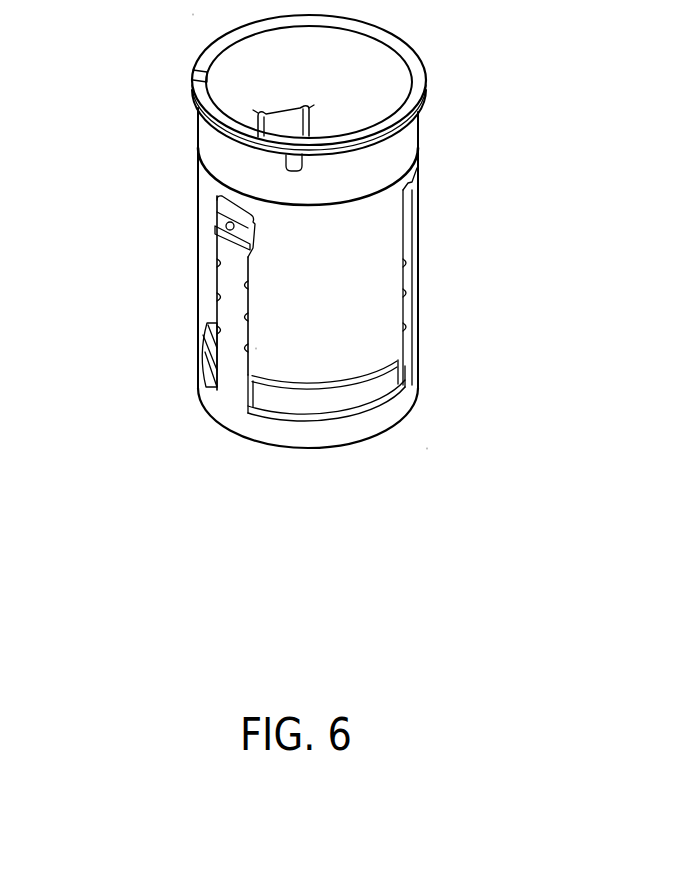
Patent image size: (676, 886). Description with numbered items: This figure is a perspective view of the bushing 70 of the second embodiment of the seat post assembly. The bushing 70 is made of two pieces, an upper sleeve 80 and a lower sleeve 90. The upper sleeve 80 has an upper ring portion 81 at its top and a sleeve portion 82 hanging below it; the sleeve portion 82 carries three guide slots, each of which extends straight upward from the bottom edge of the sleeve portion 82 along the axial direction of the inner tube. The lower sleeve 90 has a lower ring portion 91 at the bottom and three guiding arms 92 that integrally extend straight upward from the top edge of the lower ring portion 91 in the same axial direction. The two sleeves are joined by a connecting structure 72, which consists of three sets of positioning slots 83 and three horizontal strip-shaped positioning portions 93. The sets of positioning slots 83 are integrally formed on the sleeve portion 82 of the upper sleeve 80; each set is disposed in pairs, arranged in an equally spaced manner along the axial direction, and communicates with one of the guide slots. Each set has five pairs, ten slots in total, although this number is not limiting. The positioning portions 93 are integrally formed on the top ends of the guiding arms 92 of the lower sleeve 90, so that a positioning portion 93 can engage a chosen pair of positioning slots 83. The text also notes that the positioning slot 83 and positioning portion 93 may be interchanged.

The bushing 70 is at (535, 118).
The upper sleeve 80 is at (426, 113).
The upper ring portion 81 is at (212, 142).
The sleeve portion 82 is at (205, 187).
The lower sleeve 90 is at (431, 292).
The lower ring portion 91 is at (358, 427).
The guiding arm 92 is at (233, 347).
The connecting structure 72 is at (82, 215).
The positioning portion 93 is at (213, 218).
The positioning slot 83 is at (228, 220).